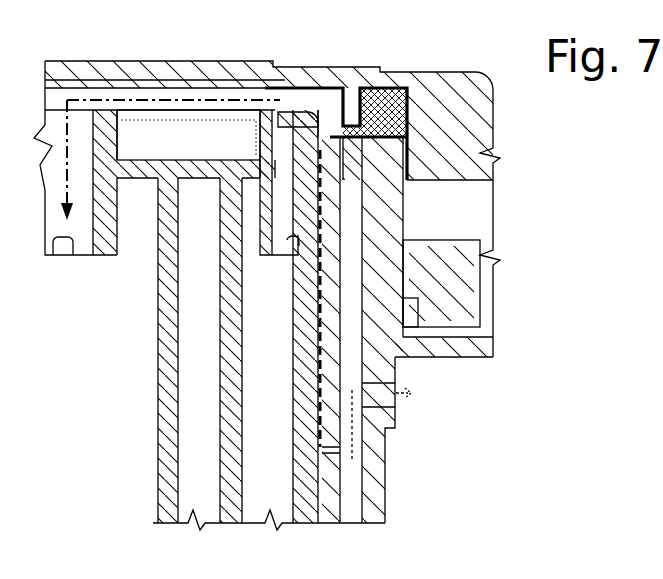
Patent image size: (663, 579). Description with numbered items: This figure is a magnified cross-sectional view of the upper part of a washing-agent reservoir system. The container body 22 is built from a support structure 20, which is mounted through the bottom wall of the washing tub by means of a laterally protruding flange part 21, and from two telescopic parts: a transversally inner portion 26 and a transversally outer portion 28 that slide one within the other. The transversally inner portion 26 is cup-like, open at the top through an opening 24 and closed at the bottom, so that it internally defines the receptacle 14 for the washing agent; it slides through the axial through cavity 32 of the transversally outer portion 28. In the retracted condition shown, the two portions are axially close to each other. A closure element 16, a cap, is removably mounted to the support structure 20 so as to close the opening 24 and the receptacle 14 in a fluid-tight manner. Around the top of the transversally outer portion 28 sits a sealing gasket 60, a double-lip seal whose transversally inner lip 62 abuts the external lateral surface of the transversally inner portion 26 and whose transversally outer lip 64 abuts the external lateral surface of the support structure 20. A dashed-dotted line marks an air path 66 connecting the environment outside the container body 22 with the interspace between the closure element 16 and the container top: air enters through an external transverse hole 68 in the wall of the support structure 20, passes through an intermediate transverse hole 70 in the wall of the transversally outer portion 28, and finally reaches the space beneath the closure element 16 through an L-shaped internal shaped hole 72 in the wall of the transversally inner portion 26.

The receptacle 14 is at (124, 330).
The closure element 16 is at (441, 70).
The support structure 20 is at (405, 231).
The flange part 21 is at (478, 347).
The container body 22 is at (528, 80).
The opening 24 is at (93, 145).
The transversally inner portion 26 is at (318, 113).
The transversally outer portion 28 is at (343, 221).
The axial through cavity 32 is at (316, 500).
The sealing gasket 60 is at (350, 151).
The transversally inner lip 62 is at (330, 143).
The transversally outer lip 64 is at (357, 168).
The air path 66 is at (233, 100).
The external transverse hole 68 is at (388, 400).
The intermediate transverse hole 70 is at (328, 467).
The internal shaped hole 72 is at (306, 246).